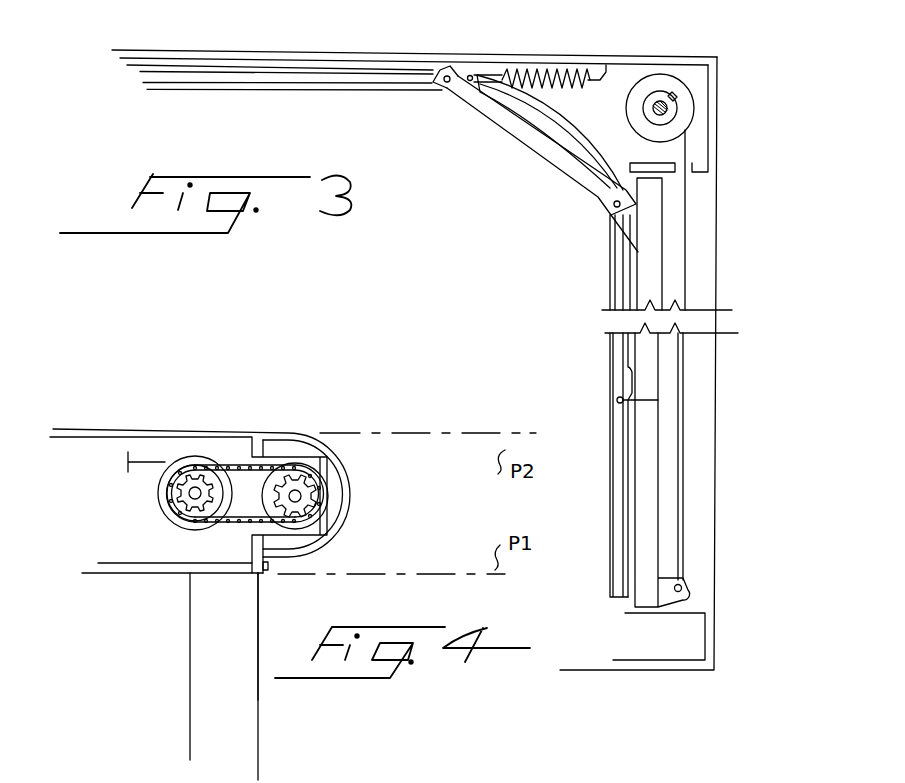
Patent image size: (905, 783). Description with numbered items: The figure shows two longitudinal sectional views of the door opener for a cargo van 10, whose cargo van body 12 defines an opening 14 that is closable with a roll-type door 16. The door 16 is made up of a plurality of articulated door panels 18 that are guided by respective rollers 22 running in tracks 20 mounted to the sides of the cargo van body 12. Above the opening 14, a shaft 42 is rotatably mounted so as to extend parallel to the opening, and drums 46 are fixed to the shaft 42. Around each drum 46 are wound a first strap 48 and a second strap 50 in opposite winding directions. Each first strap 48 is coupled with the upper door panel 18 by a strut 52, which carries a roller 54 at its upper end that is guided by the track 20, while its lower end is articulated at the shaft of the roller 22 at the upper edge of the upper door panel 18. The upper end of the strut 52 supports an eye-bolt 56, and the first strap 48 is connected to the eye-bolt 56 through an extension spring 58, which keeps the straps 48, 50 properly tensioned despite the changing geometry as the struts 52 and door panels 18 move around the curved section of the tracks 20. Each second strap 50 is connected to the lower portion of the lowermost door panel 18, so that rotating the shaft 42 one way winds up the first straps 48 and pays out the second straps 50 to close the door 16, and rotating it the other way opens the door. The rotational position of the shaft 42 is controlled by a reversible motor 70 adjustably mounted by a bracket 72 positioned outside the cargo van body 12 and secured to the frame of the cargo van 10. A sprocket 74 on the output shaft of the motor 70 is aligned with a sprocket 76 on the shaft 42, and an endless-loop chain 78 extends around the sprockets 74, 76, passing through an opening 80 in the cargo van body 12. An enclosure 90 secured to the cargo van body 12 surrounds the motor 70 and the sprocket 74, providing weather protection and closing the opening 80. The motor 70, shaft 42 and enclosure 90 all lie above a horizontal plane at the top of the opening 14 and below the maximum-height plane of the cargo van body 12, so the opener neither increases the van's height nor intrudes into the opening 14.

In FIG. 4, the cargo van 10 is at (47, 389).
In FIG. 4, the cargo van body 12 is at (245, 430).
In FIG. 4, the opening 14 is at (245, 740).
In FIG. 3, the roll-type door 16 is at (742, 272).
In FIG. 3, the door panels 18 is at (652, 200).
In FIG. 3, the tracks 20 is at (350, 85).
In FIG. 3, the rollers 22 is at (600, 212).
In FIG. 3, the shaft 42 is at (668, 108).
In FIG. 4, the shaft 42 is at (195, 487).
In FIG. 3, the drums 46 is at (697, 82).
In FIG. 4, the drums 46 is at (175, 462).
In FIG. 3, the first straps 48 is at (620, 78).
In FIG. 4, the first straps 48 is at (140, 455).
In FIG. 3, the second straps 50 is at (685, 245).
In FIG. 3, the strut 52 is at (545, 155).
In FIG. 3, the roller 54 is at (455, 96).
In FIG. 3, the eye-bolt 56 is at (448, 64).
In FIG. 3, the extension spring 58 is at (545, 72).
In FIG. 4, the motor 70 is at (330, 480).
In FIG. 4, the bracket 72 is at (320, 446).
In FIG. 4, the sprocket 74 is at (310, 497).
In FIG. 4, the sprocket 76 is at (170, 520).
In FIG. 4, the endless-loop chain 78 is at (218, 530).
In FIG. 4, the opening 80 is at (245, 530).
In FIG. 4, the enclosure 90 is at (352, 522).